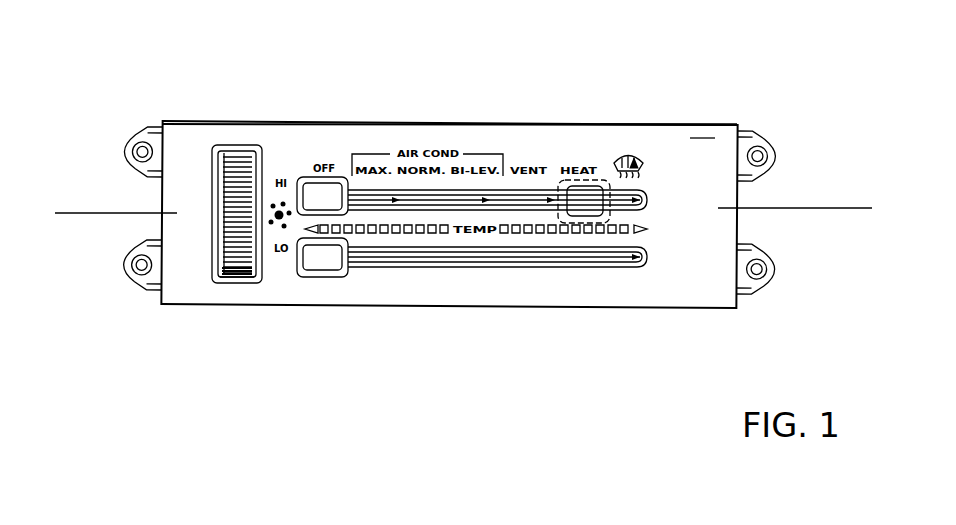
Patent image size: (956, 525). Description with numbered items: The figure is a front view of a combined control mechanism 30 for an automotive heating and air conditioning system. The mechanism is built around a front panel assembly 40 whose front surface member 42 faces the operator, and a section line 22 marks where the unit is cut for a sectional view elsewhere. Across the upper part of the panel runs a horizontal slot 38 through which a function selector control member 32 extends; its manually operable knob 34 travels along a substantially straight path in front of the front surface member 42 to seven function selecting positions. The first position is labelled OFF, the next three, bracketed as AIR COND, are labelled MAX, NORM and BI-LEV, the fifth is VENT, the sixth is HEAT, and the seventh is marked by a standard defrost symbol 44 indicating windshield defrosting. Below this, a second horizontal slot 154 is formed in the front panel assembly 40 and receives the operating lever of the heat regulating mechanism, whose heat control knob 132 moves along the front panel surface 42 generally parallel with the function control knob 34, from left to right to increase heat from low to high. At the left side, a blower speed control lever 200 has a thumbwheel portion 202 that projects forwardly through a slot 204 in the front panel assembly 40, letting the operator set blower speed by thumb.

The section line 2-2 22 is at (68, 198).
The combined control mechanism 30 is at (767, 115).
The function selector control member 32 is at (288, 158).
The manually operable knob 34 is at (338, 177).
The horizontal slot 38 is at (645, 199).
The front panel assembly 40 is at (665, 124).
The front surface member 42 is at (702, 138).
The standard defrost symbol 44 is at (634, 145).
The heat control knob 132 is at (323, 278).
The horizontal slot 154 is at (648, 262).
The blower speed control lever 200 is at (211, 254).
The thumbwheel portion 202 is at (232, 152).
The slot 204 is at (232, 279).